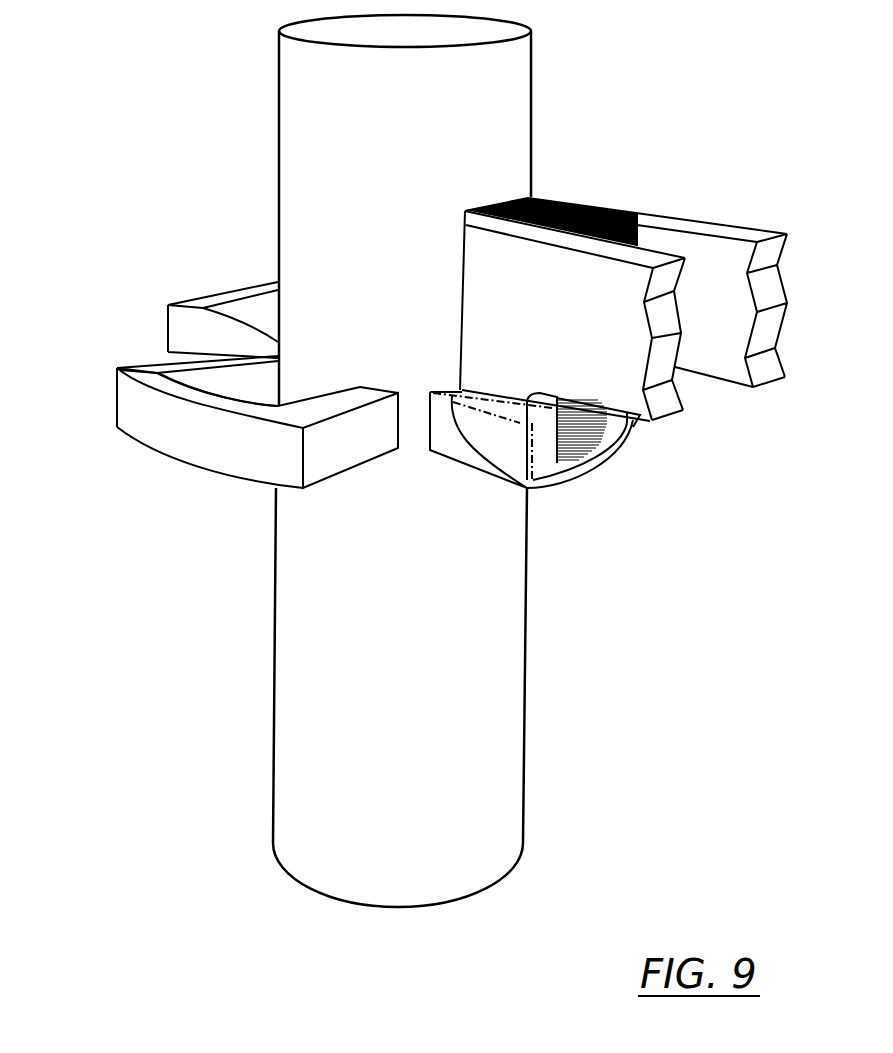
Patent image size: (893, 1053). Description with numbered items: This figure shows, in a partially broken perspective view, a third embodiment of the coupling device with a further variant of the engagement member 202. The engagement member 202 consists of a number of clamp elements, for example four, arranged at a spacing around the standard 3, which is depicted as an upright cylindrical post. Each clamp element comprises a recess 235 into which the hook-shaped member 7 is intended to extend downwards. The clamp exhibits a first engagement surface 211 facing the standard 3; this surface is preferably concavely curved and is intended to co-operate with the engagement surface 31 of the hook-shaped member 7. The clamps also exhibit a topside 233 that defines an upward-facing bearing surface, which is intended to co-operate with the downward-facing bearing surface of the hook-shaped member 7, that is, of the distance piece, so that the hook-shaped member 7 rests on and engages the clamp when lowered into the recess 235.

The standard 3 is at (256, 722).
The hook-shaped member 7 is at (690, 197).
The engagement surface 31 is at (637, 441).
The engagement member 202 is at (214, 436).
The first engagement surface 211 is at (256, 312).
The topside 233 is at (195, 389).
The recess 235 is at (236, 392).